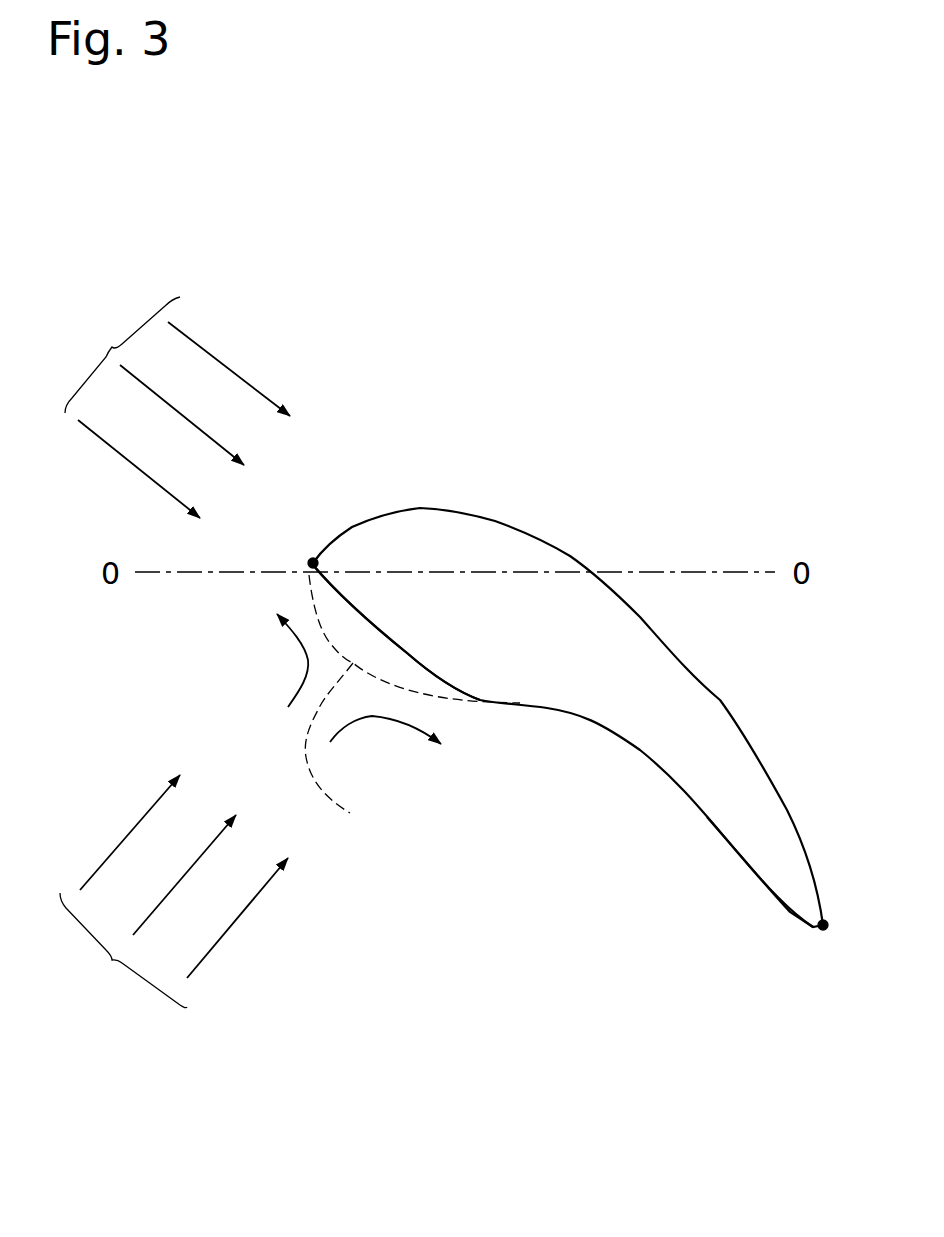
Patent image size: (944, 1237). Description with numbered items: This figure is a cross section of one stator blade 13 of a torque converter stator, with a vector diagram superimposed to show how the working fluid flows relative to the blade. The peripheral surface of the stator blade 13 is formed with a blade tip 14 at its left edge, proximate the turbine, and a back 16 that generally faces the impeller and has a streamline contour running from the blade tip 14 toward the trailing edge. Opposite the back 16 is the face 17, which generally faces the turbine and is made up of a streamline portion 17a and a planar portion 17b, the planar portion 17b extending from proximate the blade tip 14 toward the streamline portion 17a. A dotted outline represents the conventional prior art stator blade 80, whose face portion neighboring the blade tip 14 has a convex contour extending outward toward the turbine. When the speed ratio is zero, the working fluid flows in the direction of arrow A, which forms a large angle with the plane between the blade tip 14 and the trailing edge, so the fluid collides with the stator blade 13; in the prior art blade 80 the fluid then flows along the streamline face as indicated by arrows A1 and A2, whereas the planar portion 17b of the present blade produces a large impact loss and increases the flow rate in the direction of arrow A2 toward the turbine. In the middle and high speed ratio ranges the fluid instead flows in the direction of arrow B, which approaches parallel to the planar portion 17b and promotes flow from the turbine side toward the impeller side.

The stator blade 13 is at (565, 669).
The blade tip 14 is at (313, 563).
The back 16 is at (538, 534).
The face 17 is at (548, 710).
The streamline portion 17a is at (707, 817).
The planar portion 17b is at (405, 654).
The prior art stator blade 80 is at (412, 704).
The arrow A is at (174, 891).
The arrow B is at (177, 407).
The arrow A1 is at (409, 744).
The arrow A2 is at (270, 648).